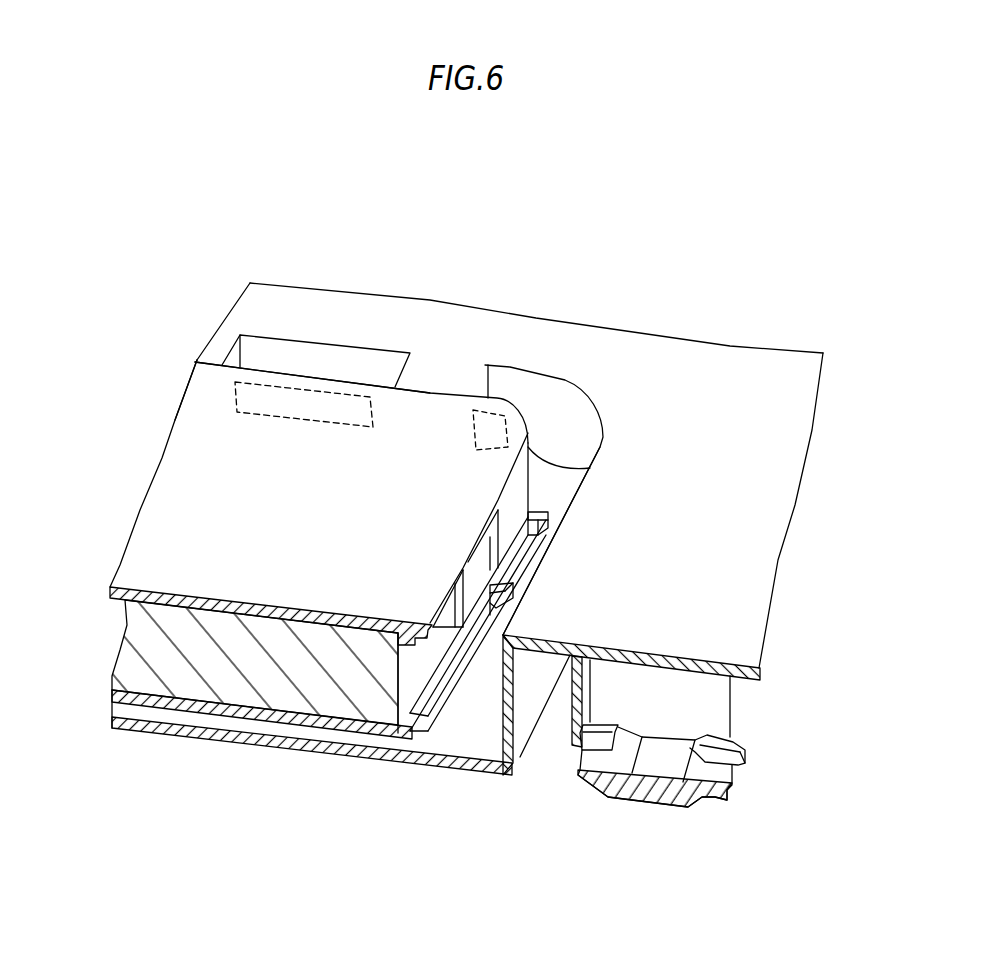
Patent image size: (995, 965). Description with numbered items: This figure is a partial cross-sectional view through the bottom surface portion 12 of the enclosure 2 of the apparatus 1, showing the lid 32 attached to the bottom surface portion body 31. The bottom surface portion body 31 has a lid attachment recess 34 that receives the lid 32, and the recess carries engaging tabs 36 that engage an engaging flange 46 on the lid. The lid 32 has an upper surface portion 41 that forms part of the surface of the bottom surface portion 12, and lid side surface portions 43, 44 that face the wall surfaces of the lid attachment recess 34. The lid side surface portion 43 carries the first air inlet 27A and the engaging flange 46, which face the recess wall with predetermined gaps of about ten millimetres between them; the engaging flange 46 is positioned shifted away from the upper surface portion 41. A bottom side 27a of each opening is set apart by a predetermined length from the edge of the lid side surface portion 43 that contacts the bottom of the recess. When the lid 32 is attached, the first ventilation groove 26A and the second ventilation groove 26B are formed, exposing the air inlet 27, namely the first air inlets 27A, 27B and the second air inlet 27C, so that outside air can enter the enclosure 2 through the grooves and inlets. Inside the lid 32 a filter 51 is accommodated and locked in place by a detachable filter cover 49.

The electronic apparatus 1 is at (792, 273).
The enclosure 2 is at (748, 695).
The bottom surface portion 12 is at (698, 320).
The first ventilation groove 26A is at (538, 424).
The second ventilation groove 26B is at (262, 357).
The air inlet 27 is at (481, 560).
The first air inlet 27A is at (493, 543).
The first air inlet 27B is at (500, 410).
The second air inlet 27C is at (313, 390).
The bottom side of opening 27a is at (477, 600).
The bottom surface portion body 31 is at (625, 353).
The lid 32 is at (195, 472).
The lid attachment recess 34 is at (492, 750).
The engaging tab 36 is at (513, 580).
The upper surface portion 41 is at (208, 413).
The lid side surface portion 43 is at (515, 502).
The lid side surface portion 44 is at (363, 387).
The engaging flange 46 is at (433, 720).
The filter cover 49 is at (285, 723).
The filter 51 is at (210, 678).